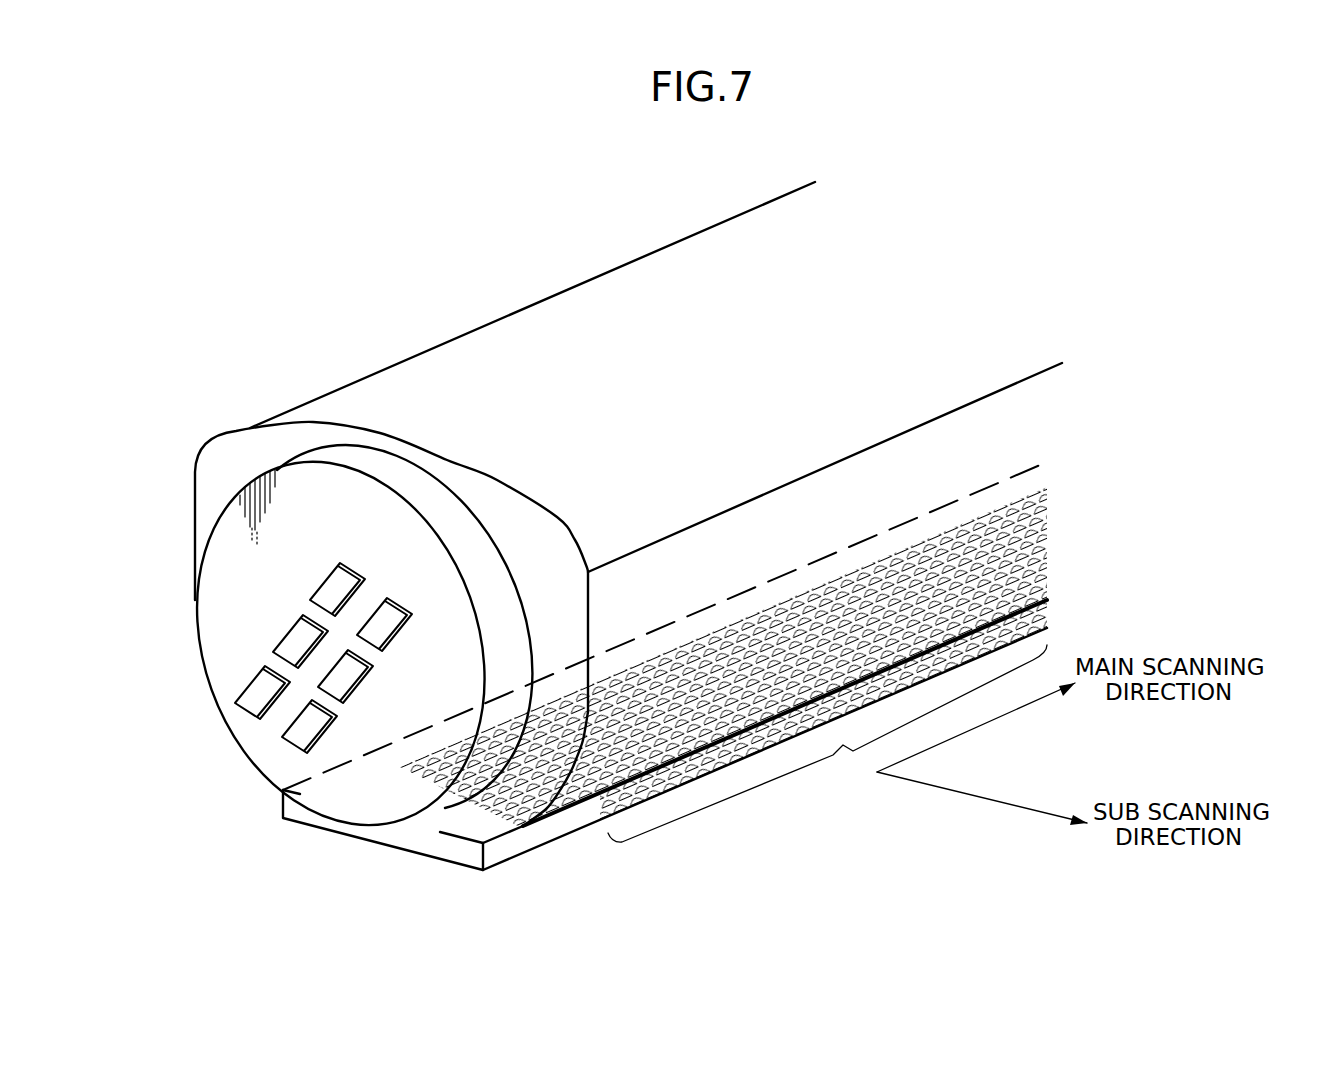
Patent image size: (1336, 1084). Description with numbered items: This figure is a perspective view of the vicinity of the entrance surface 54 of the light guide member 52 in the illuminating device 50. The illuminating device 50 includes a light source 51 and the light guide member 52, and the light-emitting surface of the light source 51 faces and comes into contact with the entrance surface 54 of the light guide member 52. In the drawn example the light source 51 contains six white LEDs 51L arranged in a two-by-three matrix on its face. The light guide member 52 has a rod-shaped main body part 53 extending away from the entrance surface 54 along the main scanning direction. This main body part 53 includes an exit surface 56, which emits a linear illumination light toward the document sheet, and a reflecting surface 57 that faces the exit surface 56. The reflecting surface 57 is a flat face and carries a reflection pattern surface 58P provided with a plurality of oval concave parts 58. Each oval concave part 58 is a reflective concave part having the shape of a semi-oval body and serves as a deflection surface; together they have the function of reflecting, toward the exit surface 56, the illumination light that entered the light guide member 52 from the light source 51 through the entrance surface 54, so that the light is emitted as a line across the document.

The illuminating device 50 is at (298, 332).
The light source 51 is at (225, 632).
The white LEDs 51L is at (237, 695).
The light guide member 52 is at (700, 223).
The rod-shaped main body part 53 is at (980, 453).
The entrance surface 54 is at (443, 833).
The exit surface 56 is at (582, 328).
The reflecting surface 57 is at (565, 836).
The oval concave part 58 is at (702, 687).
The reflection pattern surface 58P is at (845, 752).